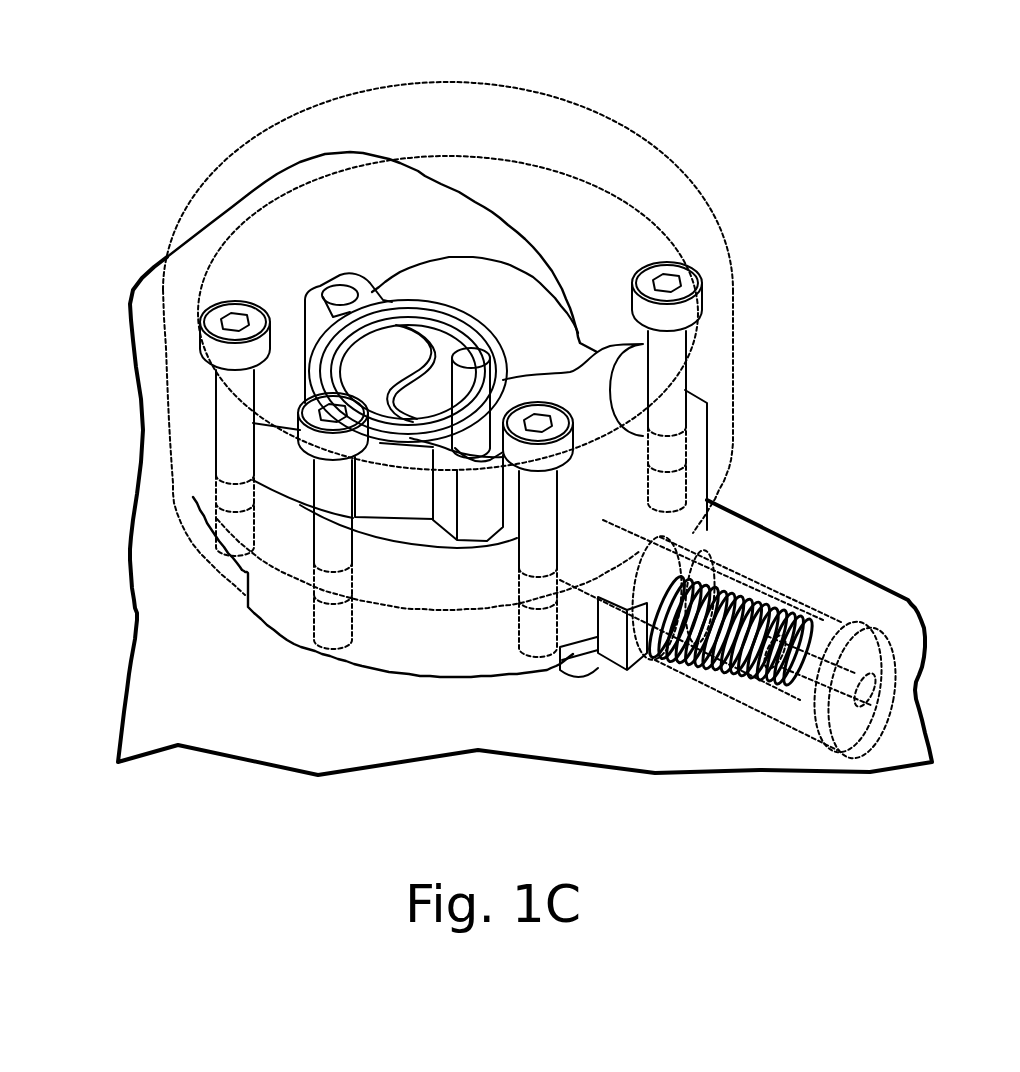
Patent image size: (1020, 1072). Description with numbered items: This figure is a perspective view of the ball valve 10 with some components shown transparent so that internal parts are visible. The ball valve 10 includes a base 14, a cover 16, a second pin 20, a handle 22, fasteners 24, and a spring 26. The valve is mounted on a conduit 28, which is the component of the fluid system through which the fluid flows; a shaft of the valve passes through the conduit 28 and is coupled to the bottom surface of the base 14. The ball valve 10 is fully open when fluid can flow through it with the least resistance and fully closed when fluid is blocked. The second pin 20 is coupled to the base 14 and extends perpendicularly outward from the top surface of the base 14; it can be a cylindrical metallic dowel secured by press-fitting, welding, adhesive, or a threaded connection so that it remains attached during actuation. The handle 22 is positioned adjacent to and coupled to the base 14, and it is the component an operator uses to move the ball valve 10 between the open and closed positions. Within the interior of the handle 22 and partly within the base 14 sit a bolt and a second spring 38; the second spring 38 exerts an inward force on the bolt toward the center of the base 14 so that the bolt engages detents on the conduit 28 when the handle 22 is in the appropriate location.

The ball valve 10 is at (210, 138).
The base 14 is at (405, 652).
The cover 16 is at (597, 138).
The second pin 20 is at (452, 378).
The handle 22 is at (767, 583).
The fasteners 24 is at (230, 327).
The spring 26 is at (432, 310).
The conduit 28 is at (245, 678).
The second spring 38 is at (763, 670).